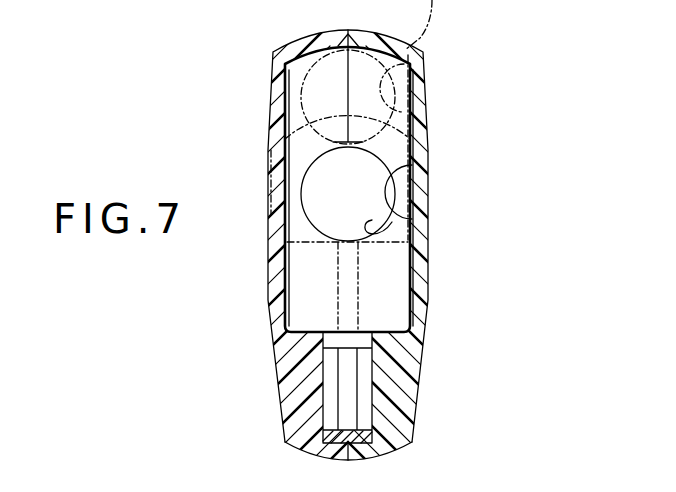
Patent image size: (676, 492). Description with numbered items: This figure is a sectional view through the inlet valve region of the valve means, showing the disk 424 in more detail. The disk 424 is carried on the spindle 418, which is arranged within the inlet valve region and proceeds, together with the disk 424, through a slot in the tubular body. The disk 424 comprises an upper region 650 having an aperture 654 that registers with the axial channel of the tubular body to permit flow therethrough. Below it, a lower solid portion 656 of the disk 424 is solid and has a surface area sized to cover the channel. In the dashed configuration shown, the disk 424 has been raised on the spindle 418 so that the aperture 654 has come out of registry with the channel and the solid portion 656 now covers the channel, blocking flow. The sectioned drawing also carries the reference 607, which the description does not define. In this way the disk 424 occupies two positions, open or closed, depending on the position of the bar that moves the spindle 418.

The disk 424 is at (293, 77).
The upper region 650 is at (400, 212).
The aperture 654 is at (393, 183).
The seat 607 is at (372, 220).
The lower solid portion 656 is at (390, 272).
The spindle 418 is at (347, 402).